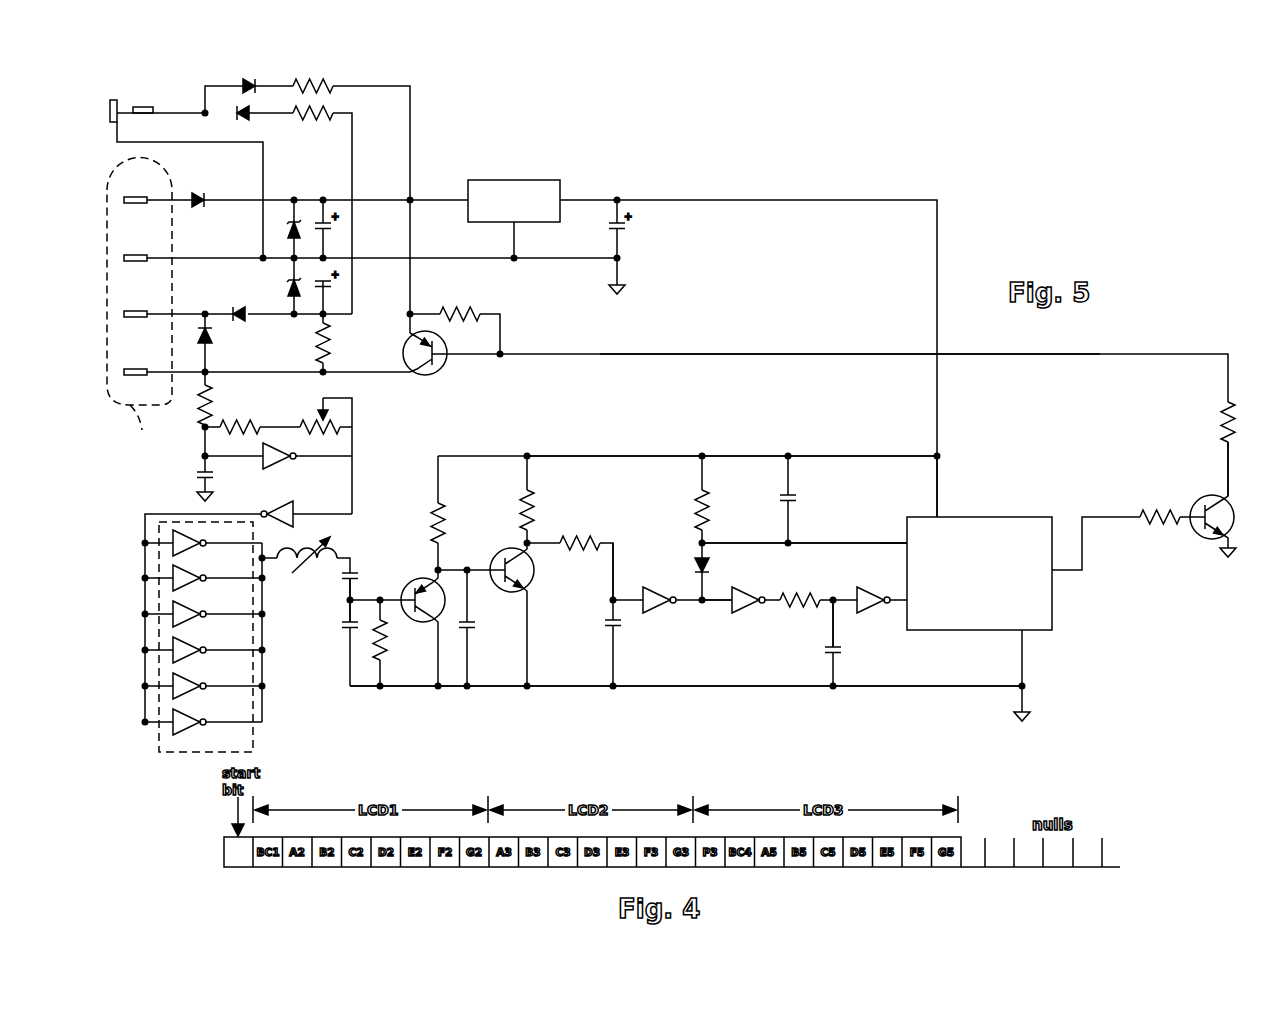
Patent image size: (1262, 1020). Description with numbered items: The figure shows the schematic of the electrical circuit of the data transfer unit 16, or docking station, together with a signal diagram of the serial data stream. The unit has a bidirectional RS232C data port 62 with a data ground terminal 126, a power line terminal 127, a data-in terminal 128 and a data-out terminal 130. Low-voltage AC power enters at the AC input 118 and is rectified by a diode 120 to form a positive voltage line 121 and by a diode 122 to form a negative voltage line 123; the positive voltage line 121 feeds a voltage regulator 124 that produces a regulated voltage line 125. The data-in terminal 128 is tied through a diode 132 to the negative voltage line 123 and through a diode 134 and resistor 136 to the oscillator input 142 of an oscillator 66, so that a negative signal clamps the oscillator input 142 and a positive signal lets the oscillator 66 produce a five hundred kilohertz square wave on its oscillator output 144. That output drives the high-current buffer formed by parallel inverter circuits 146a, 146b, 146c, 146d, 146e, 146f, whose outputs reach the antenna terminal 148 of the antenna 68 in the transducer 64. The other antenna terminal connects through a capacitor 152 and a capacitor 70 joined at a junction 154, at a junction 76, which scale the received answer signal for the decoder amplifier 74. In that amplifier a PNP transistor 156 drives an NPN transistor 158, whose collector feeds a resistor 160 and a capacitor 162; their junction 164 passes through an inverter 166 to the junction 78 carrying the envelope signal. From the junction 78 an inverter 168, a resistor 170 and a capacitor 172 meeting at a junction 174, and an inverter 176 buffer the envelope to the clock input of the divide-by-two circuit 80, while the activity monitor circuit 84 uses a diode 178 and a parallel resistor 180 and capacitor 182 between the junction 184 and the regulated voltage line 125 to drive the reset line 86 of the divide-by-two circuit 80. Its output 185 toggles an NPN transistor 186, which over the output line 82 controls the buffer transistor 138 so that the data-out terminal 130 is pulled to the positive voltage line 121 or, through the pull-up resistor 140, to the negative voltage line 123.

The data transfer unit 16 is at (732, 432).
The bidirectional data port 62 is at (141, 304).
The transducer 64 is at (412, 671).
The oscillator 66 is at (358, 482).
The antenna 68 is at (338, 556).
The capacitor 70 is at (347, 626).
The decoder amplifier 74 is at (774, 669).
The junction 76 is at (354, 570).
The junction 78 is at (712, 603).
The divide-by-two circuit 80 is at (966, 517).
The output line 82 is at (762, 354).
The activity monitor circuit 84 is at (847, 523).
The reset line 86 is at (900, 540).
The AC input connector 118 is at (133, 106).
The diode 120 is at (246, 84).
The positive voltage line 121 is at (410, 95).
The diode 122 is at (244, 118).
The negative voltage line 123 is at (352, 182).
The voltage regulator 124 is at (510, 180).
The regulated voltage line 125 is at (678, 200).
The data ground terminal 126 is at (148, 238).
The power line terminal 127 is at (150, 178).
The data-in terminal 128 is at (148, 294).
The data-out terminal 130 is at (148, 352).
The diode 132 is at (245, 312).
The diode 134 is at (210, 334).
The resistor 136 is at (210, 412).
The transistor 138 is at (432, 375).
The pull-up resistor 140 is at (328, 345).
The oscillator input 142 is at (200, 452).
The oscillator output 144 is at (145, 535).
The inverter circuit 146a is at (190, 551).
The inverter circuit 146b is at (190, 586).
The inverter circuit 146c is at (190, 622).
The inverter circuit 146d is at (190, 658).
The inverter circuit 146e is at (190, 694).
The inverter circuit 146f is at (190, 730).
The antenna terminal 148 is at (280, 552).
The capacitor 152 is at (347, 576).
The junction 154 is at (347, 600).
The PNP transistor 156 is at (430, 618).
The NPN transistor 158 is at (500, 555).
The resistor 160 is at (578, 538).
The capacitor 162 is at (618, 630).
The junction 164 is at (610, 605).
The inverter 166 is at (655, 608).
The inverter 168 is at (745, 608).
The resistor 170 is at (800, 593).
The capacitor 172 is at (838, 652).
The junction 174 is at (835, 612).
The inverter 176 is at (872, 594).
The diode 178 is at (698, 560).
The resistor 180 is at (698, 512).
The capacitor 182 is at (795, 496).
The junction 184 is at (712, 544).
The output 185 is at (1052, 605).
The NPN transistor 186 is at (1195, 500).